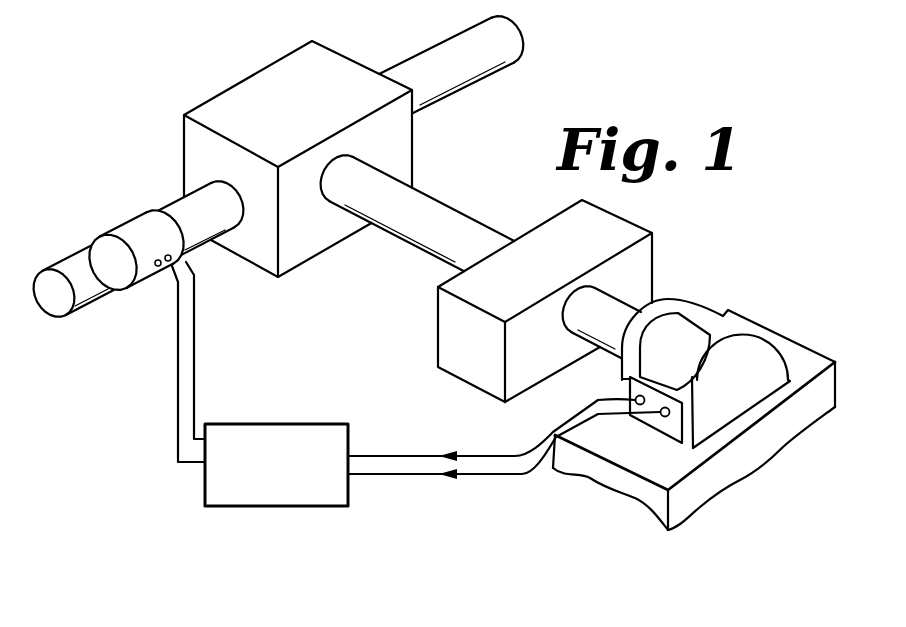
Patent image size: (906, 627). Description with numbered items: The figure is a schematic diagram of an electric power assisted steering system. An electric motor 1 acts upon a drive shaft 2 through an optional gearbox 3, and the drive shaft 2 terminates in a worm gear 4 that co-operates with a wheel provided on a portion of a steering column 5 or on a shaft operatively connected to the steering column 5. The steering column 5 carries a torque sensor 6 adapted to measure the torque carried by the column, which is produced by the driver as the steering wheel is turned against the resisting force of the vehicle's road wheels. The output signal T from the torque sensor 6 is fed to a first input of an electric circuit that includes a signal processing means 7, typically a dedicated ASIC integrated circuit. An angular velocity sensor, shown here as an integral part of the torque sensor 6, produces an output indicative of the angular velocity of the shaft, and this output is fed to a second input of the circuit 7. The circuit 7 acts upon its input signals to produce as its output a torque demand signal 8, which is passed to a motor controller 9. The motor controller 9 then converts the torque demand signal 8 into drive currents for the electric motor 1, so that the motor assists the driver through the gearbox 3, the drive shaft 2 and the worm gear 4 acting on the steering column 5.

The electric motor 1 is at (745, 370).
The drive shaft 2 is at (442, 212).
The gearbox 3 is at (544, 272).
The worm gear 4 is at (305, 110).
The steering column 5 is at (418, 55).
The torque sensor 6 is at (122, 228).
The signal processing means 7 is at (291, 476).
The torque demand signal 8 is at (473, 477).
The motor controller 9 is at (670, 422).